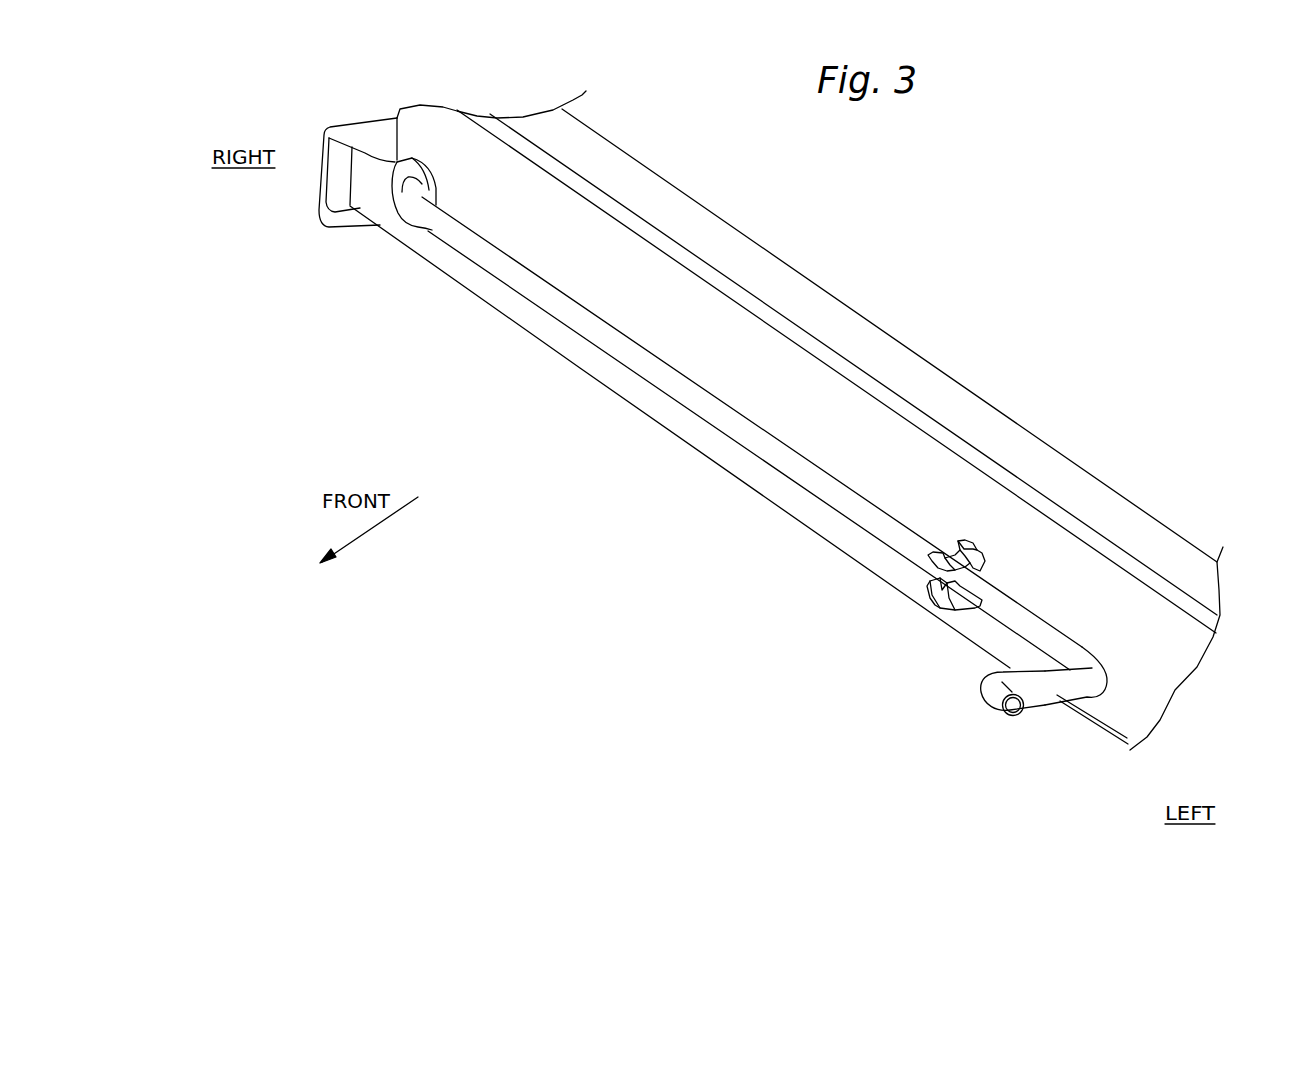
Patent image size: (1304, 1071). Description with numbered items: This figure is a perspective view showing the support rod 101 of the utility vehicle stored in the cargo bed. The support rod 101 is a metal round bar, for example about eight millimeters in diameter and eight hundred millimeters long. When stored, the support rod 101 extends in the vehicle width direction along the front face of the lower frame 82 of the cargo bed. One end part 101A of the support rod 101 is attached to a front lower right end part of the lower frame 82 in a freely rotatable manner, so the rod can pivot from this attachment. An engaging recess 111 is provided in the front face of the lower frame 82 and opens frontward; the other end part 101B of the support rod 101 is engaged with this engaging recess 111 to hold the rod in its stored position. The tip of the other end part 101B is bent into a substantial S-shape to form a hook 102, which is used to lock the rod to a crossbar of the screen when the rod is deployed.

The lower frame 82 is at (677, 422).
The support rod 101 is at (763, 463).
The one end part 101A is at (423, 217).
The other end part 101B is at (1000, 623).
The hook 102 is at (1045, 688).
The engaging recess 111 is at (930, 597).